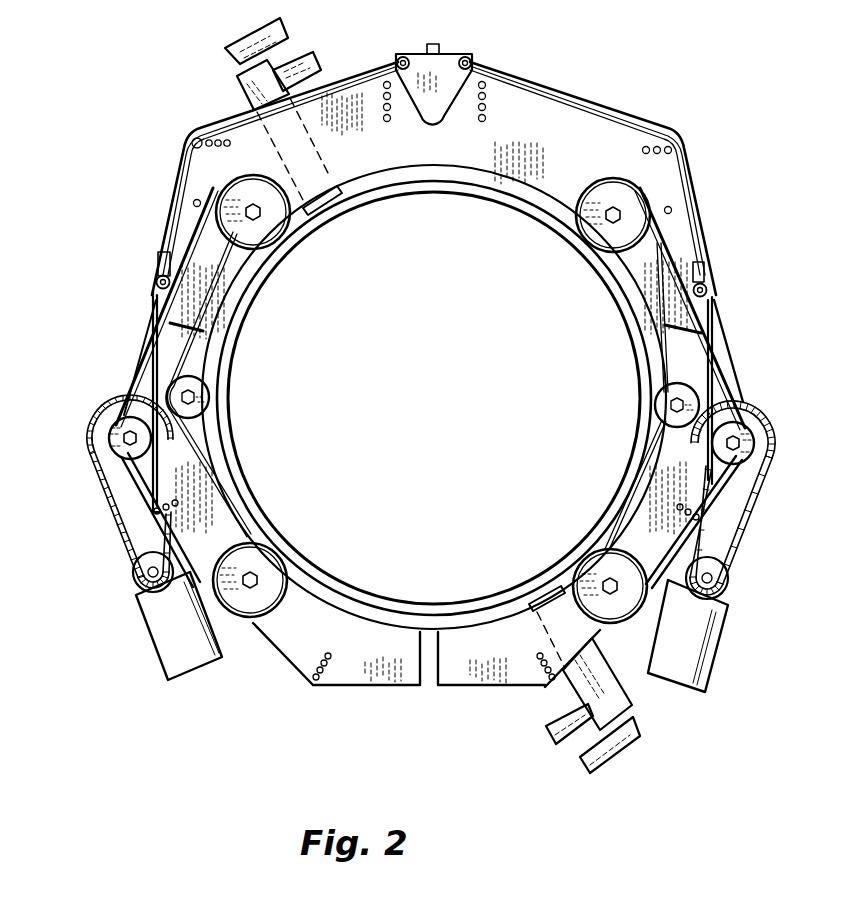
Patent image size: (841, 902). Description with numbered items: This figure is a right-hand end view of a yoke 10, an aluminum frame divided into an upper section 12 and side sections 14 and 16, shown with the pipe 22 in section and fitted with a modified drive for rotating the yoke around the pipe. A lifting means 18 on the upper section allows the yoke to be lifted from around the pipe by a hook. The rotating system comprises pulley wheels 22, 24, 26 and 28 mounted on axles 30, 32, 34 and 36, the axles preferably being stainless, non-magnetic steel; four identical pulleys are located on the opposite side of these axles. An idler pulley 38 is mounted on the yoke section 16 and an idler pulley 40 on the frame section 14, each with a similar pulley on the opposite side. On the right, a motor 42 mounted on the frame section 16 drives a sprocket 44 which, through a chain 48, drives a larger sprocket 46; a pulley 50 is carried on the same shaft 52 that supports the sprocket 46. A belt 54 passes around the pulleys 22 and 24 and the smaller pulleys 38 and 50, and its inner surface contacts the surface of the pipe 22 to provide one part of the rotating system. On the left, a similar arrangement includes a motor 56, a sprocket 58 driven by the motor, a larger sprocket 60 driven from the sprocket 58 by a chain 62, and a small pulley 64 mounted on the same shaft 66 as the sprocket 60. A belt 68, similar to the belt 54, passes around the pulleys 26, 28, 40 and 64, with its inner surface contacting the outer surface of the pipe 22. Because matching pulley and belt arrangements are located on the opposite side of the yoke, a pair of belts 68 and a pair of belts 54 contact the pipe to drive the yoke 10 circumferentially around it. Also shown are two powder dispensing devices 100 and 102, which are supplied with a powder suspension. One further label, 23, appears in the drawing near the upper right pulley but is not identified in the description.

The yoke 10 is at (434, 360).
The upper section 12 is at (533, 120).
The side section 14 is at (152, 300).
The side section 16 is at (719, 310).
The lifting means 18 is at (425, 63).
The pipe 22 is at (232, 342).
The upper right roller 23 is at (597, 347).
The pulley wheel 24 is at (584, 594).
The pulley wheel 26 is at (285, 559).
The pulley wheel 28 is at (260, 356).
The axle 30 is at (613, 210).
The axle 32 is at (608, 585).
The axle 34 is at (254, 580).
The axle 36 is at (257, 222).
The idler pulley 38 is at (665, 405).
The idler pulley 40 is at (197, 400).
The motor 42 is at (700, 638).
The sprocket 44 is at (724, 572).
The sprocket 46 is at (758, 443).
The chain 48 is at (740, 542).
The pulley 50 is at (733, 463).
The shaft 52 is at (758, 437).
The belt 54 is at (726, 368).
The motor 56 is at (165, 630).
The sprocket 58 is at (148, 569).
The sprocket 60 is at (102, 486).
The chain 62 is at (121, 542).
The pulley 64 is at (102, 409).
The shaft 66 is at (128, 443).
The belt 68 is at (142, 362).
The powder dispensing device 100 is at (237, 82).
The powder dispensing device 102 is at (628, 704).